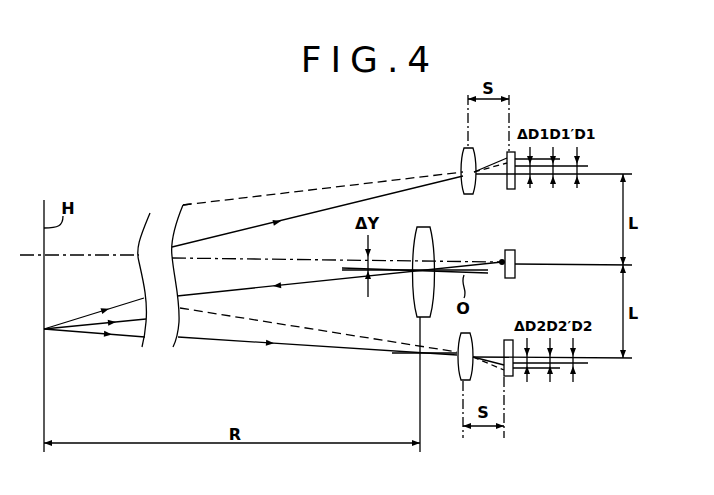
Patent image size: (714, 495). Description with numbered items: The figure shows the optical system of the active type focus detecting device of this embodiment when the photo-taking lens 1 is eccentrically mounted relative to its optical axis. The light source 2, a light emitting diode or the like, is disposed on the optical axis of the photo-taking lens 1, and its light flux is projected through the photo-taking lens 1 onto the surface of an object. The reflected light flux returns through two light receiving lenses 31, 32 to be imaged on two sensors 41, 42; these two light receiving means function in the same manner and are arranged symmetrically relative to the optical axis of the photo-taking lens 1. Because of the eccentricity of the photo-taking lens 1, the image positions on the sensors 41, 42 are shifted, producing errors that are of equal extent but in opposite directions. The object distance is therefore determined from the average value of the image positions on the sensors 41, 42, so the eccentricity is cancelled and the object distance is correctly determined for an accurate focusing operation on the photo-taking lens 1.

The photo-taking lens 1 is at (432, 233).
The light source 2 is at (514, 250).
The light receiving lens 31 is at (462, 150).
The light receiving lens 32 is at (458, 379).
The sensor 41 is at (510, 151).
The sensor 42 is at (511, 377).